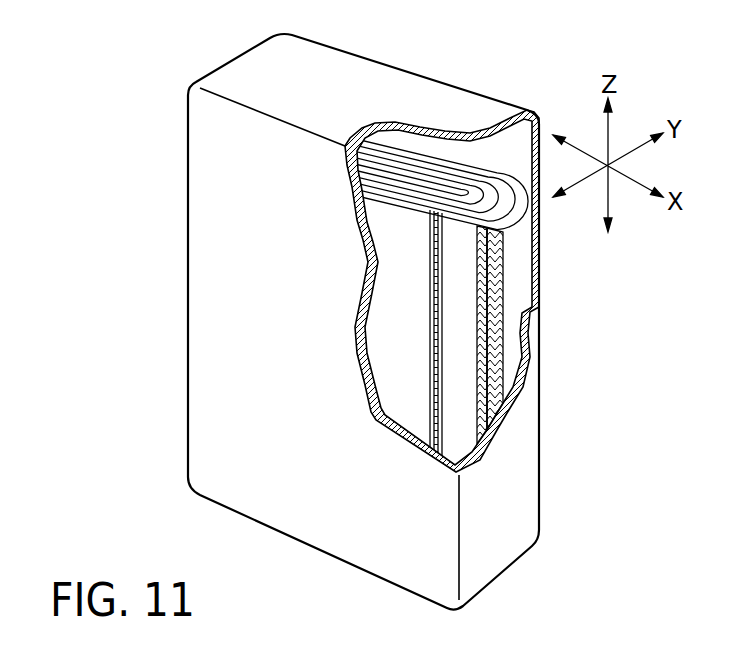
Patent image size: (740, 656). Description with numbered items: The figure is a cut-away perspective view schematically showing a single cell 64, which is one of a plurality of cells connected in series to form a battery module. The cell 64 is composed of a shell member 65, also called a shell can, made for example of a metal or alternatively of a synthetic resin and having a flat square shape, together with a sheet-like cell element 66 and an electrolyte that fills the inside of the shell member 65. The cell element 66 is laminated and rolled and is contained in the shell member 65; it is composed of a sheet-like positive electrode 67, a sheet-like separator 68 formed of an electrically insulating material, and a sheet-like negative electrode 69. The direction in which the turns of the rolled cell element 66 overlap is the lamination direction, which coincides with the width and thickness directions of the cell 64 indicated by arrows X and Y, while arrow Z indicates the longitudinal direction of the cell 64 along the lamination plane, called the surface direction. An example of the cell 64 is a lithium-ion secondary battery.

The cell 64 is at (420, 73).
The shell member 65 is at (236, 322).
The cell element 66 is at (501, 343).
The positive electrode 67 is at (497, 392).
The separator 68 is at (502, 447).
The negative electrode 69 is at (483, 418).